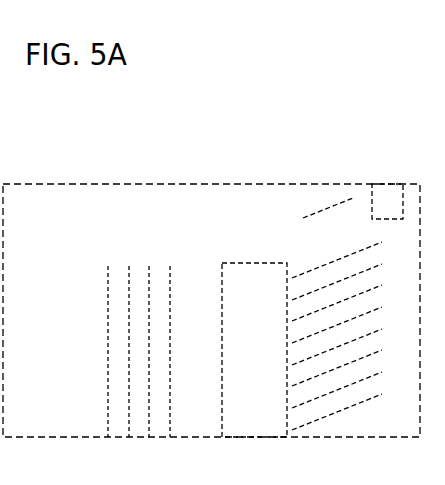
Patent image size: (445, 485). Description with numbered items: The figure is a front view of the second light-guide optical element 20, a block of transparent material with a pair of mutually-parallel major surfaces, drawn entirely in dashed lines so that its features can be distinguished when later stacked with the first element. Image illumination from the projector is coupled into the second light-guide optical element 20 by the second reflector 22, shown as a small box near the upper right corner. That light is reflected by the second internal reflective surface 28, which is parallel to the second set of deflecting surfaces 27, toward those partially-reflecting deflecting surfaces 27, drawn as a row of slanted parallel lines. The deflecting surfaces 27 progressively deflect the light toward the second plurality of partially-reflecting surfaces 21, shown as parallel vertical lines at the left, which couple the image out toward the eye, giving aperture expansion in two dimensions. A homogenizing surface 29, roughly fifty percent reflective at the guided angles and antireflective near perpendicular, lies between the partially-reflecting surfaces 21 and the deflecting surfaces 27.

The second light-guide optical element 20 is at (186, 228).
The second plurality of partially-reflecting surfaces 21 is at (122, 253).
The second reflector 22 is at (376, 175).
The second set of deflecting surfaces 27 is at (319, 293).
The second internal reflective surface 28 is at (323, 198).
The homogenizing surface 29 is at (246, 243).